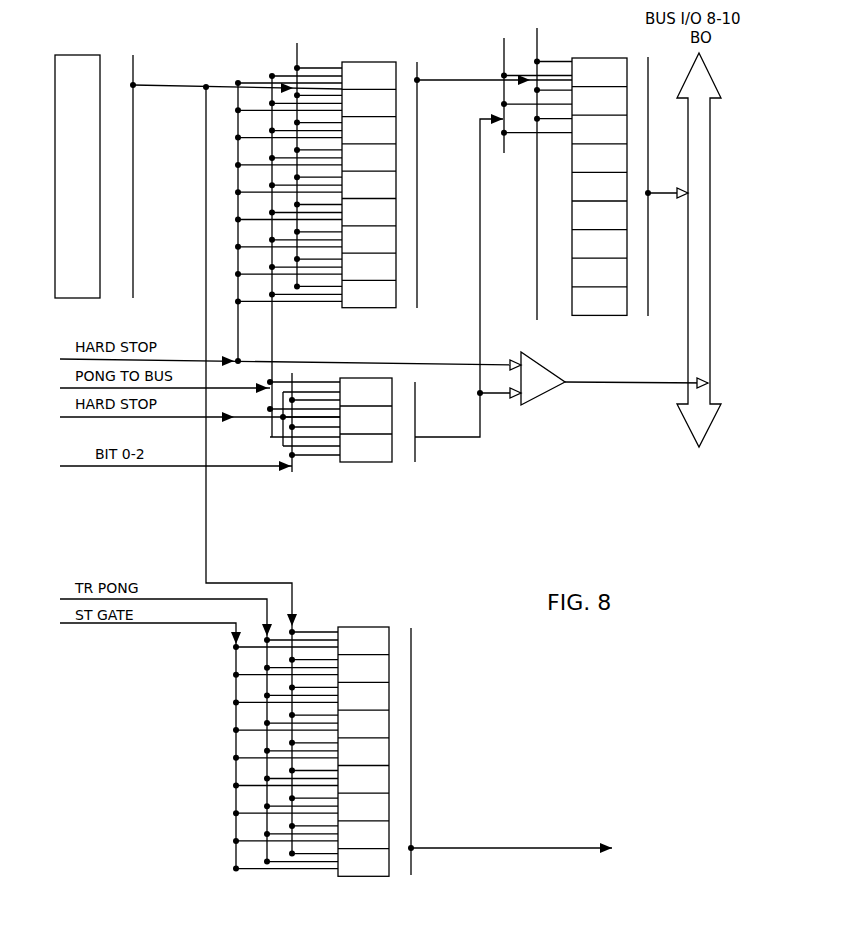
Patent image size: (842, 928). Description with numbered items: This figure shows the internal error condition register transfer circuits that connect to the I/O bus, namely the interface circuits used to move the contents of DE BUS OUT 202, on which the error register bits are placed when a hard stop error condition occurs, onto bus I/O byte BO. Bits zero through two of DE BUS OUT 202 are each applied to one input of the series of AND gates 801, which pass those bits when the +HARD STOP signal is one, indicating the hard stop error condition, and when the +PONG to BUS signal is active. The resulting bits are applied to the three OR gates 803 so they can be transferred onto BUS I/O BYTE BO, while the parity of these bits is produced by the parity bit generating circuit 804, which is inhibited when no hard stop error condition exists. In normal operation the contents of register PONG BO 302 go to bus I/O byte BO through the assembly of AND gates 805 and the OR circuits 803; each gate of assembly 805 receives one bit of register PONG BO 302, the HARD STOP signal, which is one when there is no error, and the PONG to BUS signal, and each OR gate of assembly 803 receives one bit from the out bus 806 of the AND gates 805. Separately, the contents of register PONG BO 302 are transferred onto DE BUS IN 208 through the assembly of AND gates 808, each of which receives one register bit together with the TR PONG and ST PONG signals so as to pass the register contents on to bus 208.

The register PONG BO 302 is at (84, 55).
The assembly of AND gates 805 is at (374, 62).
The out bus 806 is at (450, 80).
The OR gates 803 is at (601, 58).
The parity bit generating circuit 804 is at (541, 364).
The AND gates 801 is at (360, 462).
The assembly of AND gates 808 is at (370, 627).
The DE BUS OUT 202 is at (176, 473).
The DE BUS IN 208 is at (510, 840).